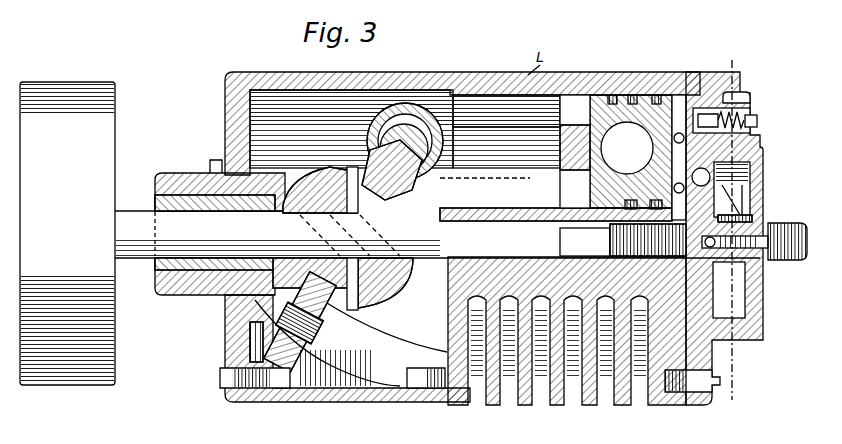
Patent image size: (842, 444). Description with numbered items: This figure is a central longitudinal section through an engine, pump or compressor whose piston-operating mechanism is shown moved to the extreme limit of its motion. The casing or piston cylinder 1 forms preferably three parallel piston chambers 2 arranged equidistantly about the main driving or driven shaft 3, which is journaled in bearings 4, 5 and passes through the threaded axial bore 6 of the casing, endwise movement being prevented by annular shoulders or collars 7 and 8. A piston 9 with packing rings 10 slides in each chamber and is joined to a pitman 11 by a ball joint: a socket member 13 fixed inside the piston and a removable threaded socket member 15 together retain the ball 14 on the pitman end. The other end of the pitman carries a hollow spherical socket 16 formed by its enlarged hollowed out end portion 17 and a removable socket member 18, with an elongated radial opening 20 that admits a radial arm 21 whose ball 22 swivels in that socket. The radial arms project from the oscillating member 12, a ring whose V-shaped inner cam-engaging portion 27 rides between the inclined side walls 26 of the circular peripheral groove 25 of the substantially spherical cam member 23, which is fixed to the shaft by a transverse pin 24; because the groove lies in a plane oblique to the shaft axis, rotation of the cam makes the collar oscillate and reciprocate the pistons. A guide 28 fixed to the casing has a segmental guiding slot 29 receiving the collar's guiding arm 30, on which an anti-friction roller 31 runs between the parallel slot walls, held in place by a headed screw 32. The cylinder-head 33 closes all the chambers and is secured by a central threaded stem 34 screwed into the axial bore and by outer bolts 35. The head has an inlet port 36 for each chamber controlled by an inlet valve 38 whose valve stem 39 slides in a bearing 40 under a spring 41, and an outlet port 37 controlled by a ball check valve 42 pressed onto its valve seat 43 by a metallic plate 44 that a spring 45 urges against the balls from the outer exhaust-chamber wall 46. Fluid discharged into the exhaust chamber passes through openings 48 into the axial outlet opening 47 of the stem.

The casing or piston cylinder 1 is at (645, 355).
The piston chamber 2 is at (677, 110).
The main driving or driven shaft 3 is at (133, 258).
The bearing 4 is at (178, 192).
The bearing 5 is at (508, 212).
The longitudinal central or axial bore 6 is at (585, 242).
The annular shoulder or collar 7 is at (748, 66).
The annular shoulder or collar 8 is at (296, 223).
The piston 9 is at (612, 100).
The packing rings 10 is at (656, 98).
The pitman 11 is at (540, 150).
The oscillating member 12 is at (372, 138).
The socket member 13 is at (655, 178).
The ball or spherical ball-joint member 14 is at (627, 148).
The removable socket member 15 is at (603, 108).
The socket 16 is at (410, 130).
The enlarged hollowed out end portion 17 is at (458, 118).
The removable end bearing or socket member 18 is at (400, 116).
The radial or lateral opening 20 is at (455, 176).
The radial arm 21 is at (425, 176).
The ball or spherical ball joint member 22 is at (440, 142).
The inner guiding or cam member 23 is at (326, 180).
The transverse pin 24 is at (336, 316).
The circular peripheral groove 25 is at (250, 326).
The side walls 26 is at (250, 306).
The inner cam-engaging portion 27 is at (329, 326).
The guide 28 is at (407, 350).
The segmental guiding slot 29 is at (302, 400).
The guiding arm 30 is at (336, 368).
The washer 31 is at (257, 348).
The headed screw 32 is at (225, 365).
The cylinder-head 33 is at (688, 122).
The central threaded stem 34 is at (615, 250).
The securing rods or bolts 35 is at (715, 375).
The inlet port 36 is at (757, 138).
The outlet port 37 is at (745, 192).
The inlet valve 38 is at (720, 92).
The valve stem 39 is at (757, 120).
The bearing 40 is at (733, 95).
The spring 41 is at (757, 114).
The ball check valve 42 is at (713, 172).
The valve seat 43 is at (740, 178).
The metallic plate 44 is at (740, 268).
The spring 45 is at (752, 212).
The outer plate or exhaust-chamber wall 46 is at (772, 328).
The axial outlet opening 47 is at (770, 262).
The openings 48 is at (700, 256).